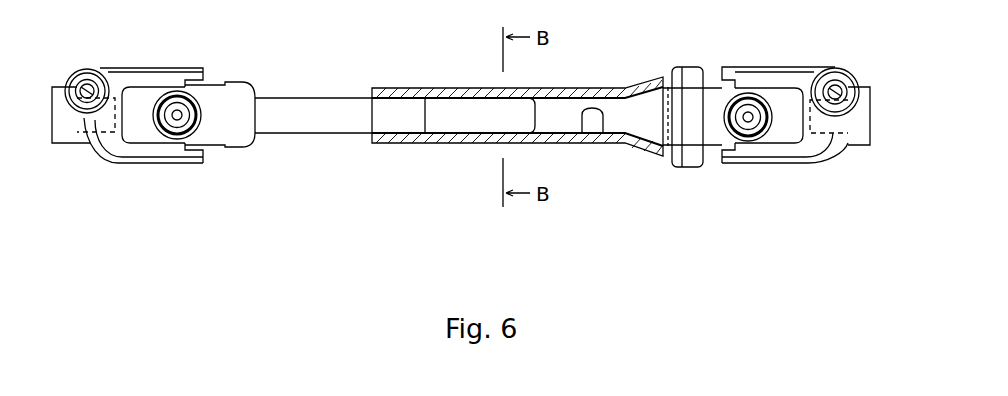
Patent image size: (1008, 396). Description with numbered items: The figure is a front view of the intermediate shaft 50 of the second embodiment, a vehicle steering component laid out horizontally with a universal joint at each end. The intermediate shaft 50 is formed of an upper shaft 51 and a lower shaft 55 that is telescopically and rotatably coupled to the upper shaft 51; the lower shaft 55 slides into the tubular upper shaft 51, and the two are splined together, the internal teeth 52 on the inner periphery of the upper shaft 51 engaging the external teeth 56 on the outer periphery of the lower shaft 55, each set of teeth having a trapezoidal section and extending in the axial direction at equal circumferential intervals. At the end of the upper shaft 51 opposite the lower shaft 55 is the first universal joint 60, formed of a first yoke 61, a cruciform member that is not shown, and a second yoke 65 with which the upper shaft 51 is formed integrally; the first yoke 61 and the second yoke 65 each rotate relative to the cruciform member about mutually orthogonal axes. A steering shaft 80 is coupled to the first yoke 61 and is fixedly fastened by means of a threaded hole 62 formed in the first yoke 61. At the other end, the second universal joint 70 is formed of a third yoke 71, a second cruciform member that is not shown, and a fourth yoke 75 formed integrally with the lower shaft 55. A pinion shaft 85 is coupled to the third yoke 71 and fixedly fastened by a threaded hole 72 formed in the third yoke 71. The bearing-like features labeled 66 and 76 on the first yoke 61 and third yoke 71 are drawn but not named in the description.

The intermediate shaft 50 is at (474, 81).
The upper shaft 51 is at (396, 140).
The internal teeth 52 is at (578, 112).
The lower shaft 55 is at (315, 113).
The external teeth 56 is at (470, 133).
The first universal joint 60 is at (770, 61).
The first yoke 61 is at (792, 150).
The threaded hole 62 is at (836, 92).
The second yoke 65 is at (710, 128).
The bearing cup 66 is at (748, 122).
The second universal joint 70 is at (159, 59).
The third yoke 71 is at (133, 150).
The threaded hole 72 is at (86, 91).
The fourth yoke 75 is at (215, 128).
The bearing cup 76 is at (177, 120).
The steering shaft 80 is at (845, 148).
The pinion shaft 85 is at (78, 150).